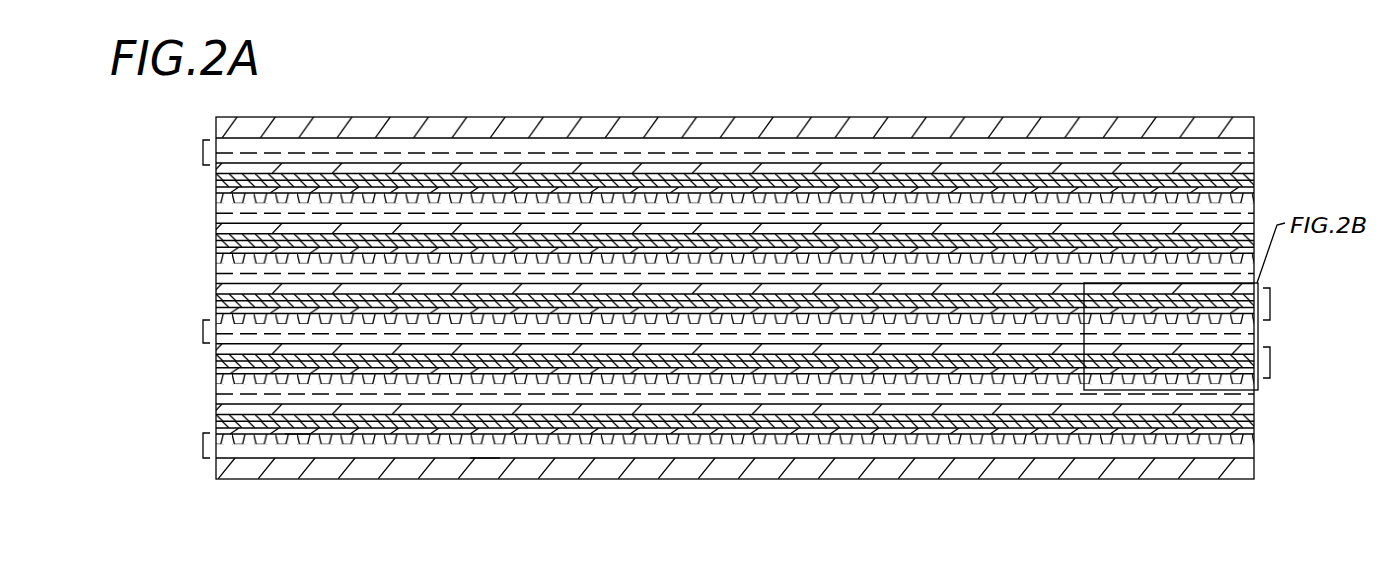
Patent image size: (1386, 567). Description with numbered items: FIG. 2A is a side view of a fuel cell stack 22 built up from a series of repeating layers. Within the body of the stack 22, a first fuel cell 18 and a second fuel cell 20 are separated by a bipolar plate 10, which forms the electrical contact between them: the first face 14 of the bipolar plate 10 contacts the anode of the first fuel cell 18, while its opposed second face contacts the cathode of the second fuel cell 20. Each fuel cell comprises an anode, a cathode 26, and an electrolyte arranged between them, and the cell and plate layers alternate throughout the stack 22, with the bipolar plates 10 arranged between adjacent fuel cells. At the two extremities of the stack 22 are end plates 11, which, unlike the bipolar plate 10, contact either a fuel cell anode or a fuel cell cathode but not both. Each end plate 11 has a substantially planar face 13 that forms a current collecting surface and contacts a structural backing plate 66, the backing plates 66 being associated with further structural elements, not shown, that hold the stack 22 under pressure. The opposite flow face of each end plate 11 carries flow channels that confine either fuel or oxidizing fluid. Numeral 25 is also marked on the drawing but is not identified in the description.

The bipolar plate 10 is at (192, 337).
The end plate 11 is at (192, 155).
The substantially planar face 13 is at (487, 460).
The first face 14 is at (1074, 556).
The first fuel cell 18 is at (1282, 302).
The second fuel cell 20 is at (1283, 357).
The stack 22 is at (735, 294).
The strand row 25 is at (297, 434).
The cathode 26 is at (1237, 566).
The structural backing plate 66 is at (547, 121).